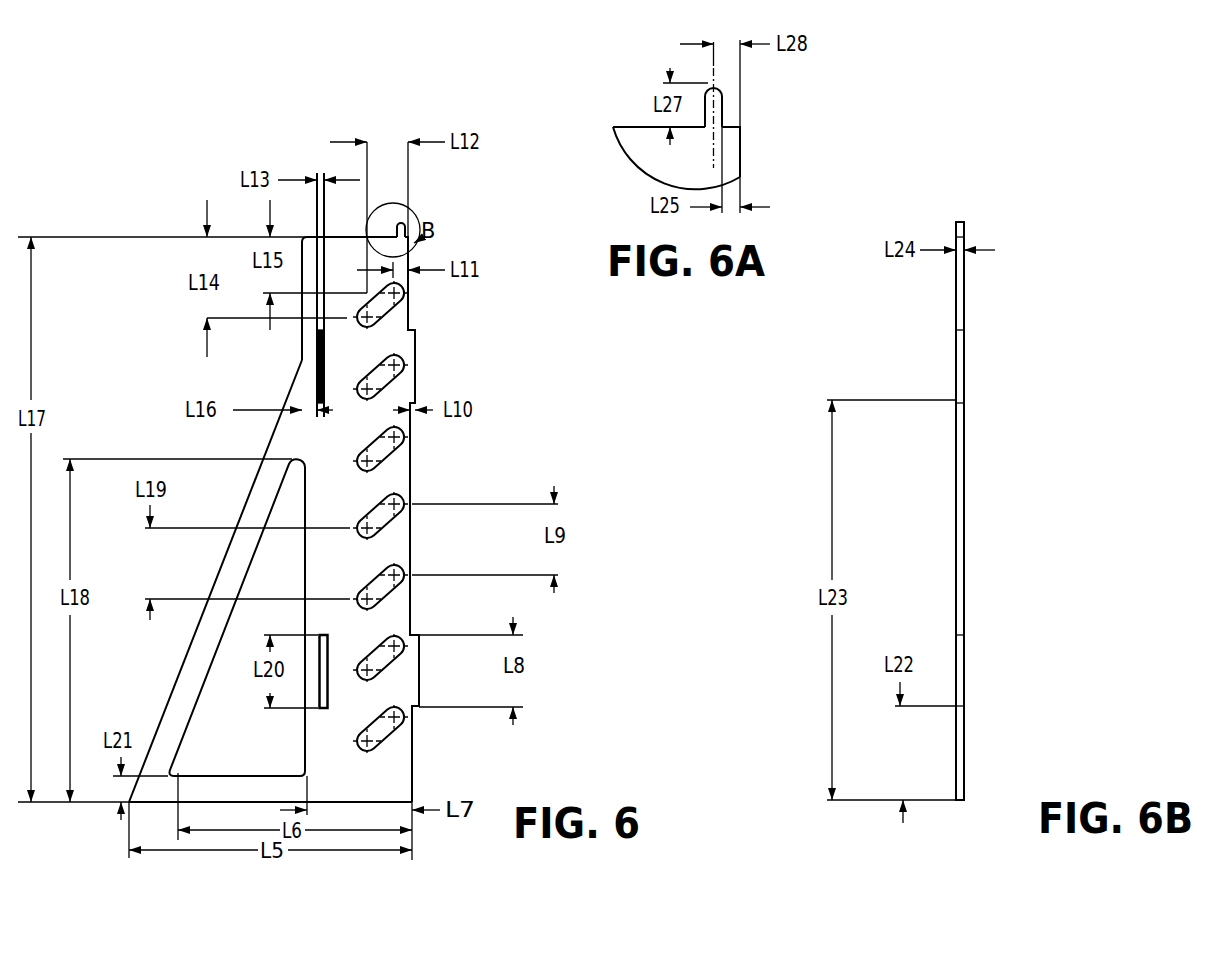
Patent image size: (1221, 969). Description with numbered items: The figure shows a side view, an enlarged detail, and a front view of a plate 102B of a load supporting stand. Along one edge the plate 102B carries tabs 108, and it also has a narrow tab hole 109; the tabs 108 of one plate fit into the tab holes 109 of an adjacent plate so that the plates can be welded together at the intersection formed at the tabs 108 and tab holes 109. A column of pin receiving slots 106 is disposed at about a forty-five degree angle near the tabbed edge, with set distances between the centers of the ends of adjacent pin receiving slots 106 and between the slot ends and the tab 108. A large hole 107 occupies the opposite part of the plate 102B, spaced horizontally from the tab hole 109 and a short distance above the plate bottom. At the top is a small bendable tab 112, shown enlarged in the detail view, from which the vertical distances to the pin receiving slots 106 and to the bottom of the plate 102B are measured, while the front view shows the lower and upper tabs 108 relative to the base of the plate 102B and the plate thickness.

In FIG. 6, the plate 102B is at (400, 775).
In FIG. 6A, the plate 102B is at (638, 150).
In FIG. 6B, the plate 102B is at (963, 478).
In FIG. 6, the pin receiving slot 106 is at (390, 307).
In FIG. 6, the hole 107 is at (192, 705).
In FIG. 6, the tab 108 is at (417, 357).
In FIG. 6B, the tab 108 is at (963, 367).
In FIG. 6, the tab hole 109 is at (320, 350).
In FIG. 6, the bendable tab 112 is at (413, 218).
In FIG. 6A, the bendable tab 112 is at (724, 88).